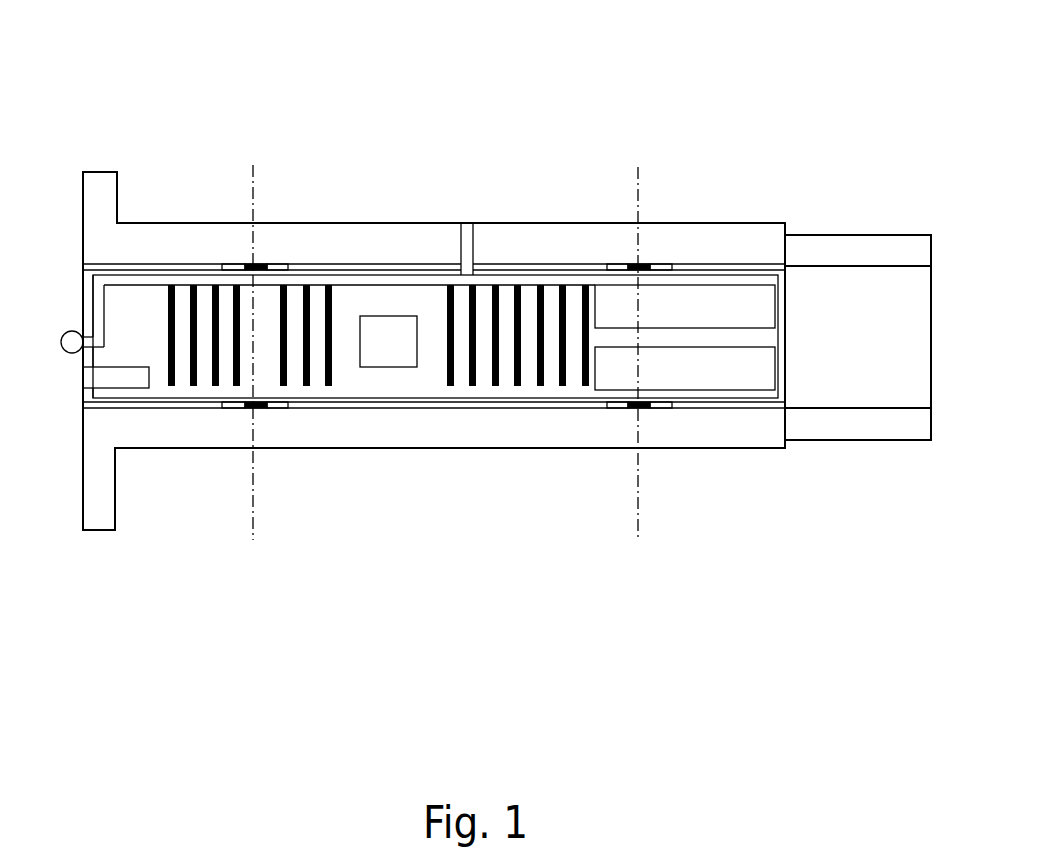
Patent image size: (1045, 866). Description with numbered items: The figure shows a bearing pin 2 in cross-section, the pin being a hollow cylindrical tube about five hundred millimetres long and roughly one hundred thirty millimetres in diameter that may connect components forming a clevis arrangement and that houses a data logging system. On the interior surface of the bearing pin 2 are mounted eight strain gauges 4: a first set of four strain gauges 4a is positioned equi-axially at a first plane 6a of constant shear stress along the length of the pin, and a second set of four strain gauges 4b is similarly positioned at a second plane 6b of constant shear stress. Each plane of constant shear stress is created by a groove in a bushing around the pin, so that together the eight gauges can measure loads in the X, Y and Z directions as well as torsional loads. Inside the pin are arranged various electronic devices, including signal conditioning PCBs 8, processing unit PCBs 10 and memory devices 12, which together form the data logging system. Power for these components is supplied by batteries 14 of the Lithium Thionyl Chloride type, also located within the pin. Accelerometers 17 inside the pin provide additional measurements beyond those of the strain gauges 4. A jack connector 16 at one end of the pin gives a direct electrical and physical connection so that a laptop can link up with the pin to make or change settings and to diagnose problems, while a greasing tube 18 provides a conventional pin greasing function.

The bearing pin 2 is at (192, 557).
The strain gauges 4 is at (640, 267).
The first set of strain gauges 4a is at (233, 266).
The second set of strain gauges 4b is at (662, 409).
The first plane of constant shear stress 6a is at (255, 335).
The second plane of constant shear stress 6b is at (640, 339).
The signal conditioning PCBs 8 is at (247, 310).
The processing unit PCBs 10 is at (438, 389).
The memory devices 12 is at (530, 388).
The batteries 14 is at (730, 372).
The jack connector 16 is at (122, 355).
The accelerometers 17 is at (377, 353).
The greasing tube 18 is at (405, 277).